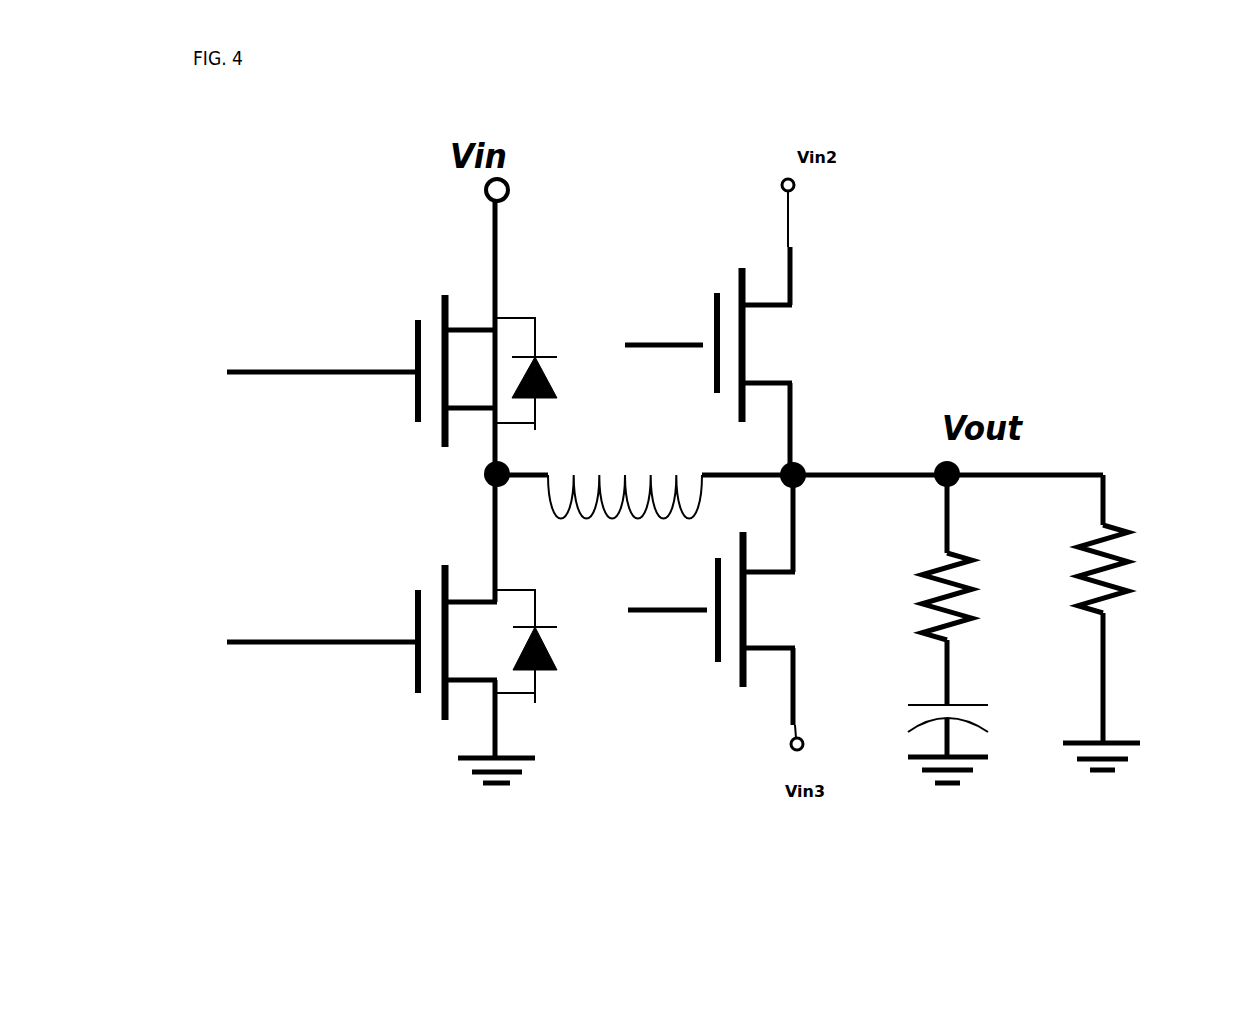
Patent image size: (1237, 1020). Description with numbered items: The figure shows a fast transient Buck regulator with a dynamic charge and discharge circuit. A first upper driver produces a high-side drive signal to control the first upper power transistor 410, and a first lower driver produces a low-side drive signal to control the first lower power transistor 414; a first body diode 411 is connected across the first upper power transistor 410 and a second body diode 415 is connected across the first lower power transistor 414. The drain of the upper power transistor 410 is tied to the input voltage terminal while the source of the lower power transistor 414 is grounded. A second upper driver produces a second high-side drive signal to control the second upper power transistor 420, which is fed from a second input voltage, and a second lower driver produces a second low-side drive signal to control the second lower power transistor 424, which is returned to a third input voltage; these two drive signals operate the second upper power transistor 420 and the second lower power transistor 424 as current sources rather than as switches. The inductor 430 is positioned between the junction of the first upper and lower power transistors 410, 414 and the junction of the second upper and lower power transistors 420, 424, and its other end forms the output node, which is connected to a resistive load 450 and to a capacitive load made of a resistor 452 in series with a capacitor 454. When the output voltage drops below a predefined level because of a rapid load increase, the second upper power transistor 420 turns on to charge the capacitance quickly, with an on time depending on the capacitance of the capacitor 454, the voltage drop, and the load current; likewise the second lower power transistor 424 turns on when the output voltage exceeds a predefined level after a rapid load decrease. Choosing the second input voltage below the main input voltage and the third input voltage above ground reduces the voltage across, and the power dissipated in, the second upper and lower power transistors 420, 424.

The power transistor Q1 410 is at (357, 372).
The first body diode 411 is at (559, 374).
The power transistor Q3 414 is at (362, 642).
The second body diode 415 is at (562, 646).
The power transistor Q2 420 is at (779, 371).
The power transistor Q4 424 is at (742, 600).
The inductor L 430 is at (645, 468).
The resistive load 450 is at (1142, 622).
The resistor Rc 452 is at (988, 590).
The capacitor C 454 is at (986, 738).